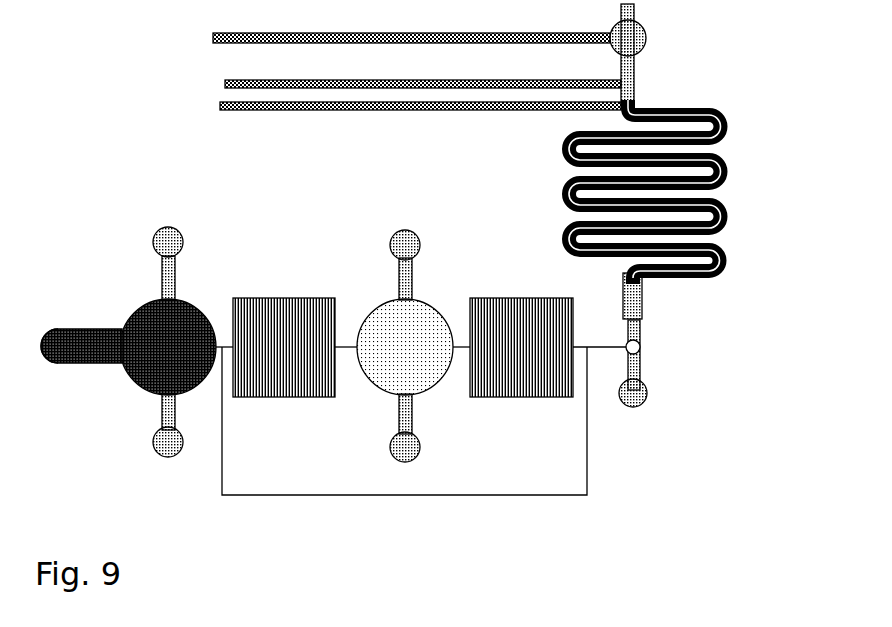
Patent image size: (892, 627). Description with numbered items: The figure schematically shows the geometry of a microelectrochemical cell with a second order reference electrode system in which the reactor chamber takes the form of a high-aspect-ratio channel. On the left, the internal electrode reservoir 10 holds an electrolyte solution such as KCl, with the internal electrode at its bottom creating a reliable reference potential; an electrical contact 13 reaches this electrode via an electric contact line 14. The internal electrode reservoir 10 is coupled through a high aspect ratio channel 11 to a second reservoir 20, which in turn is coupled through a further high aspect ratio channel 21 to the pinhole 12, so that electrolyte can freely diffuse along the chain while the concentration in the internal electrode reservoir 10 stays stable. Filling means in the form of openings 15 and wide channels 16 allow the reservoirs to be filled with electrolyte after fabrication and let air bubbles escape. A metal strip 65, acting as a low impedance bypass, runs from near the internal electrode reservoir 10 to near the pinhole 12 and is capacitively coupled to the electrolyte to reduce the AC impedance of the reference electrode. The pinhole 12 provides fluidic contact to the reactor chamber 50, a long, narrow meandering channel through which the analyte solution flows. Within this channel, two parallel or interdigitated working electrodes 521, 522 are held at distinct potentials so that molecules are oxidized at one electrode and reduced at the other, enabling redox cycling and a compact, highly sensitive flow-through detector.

The internal electrode reservoir 10 is at (168, 347).
The high aspect ratio channel 11 is at (279, 293).
The pinhole 12 is at (640, 350).
The electrical contact 13 is at (62, 336).
The electric contact line 14 is at (100, 336).
The openings 15 is at (158, 242).
The wide channels 16 is at (160, 280).
The reservoir 20 is at (405, 347).
The high aspect ratio channel 21 is at (522, 293).
The reactor chamber 50 is at (566, 141).
The metal strip 65 is at (294, 498).
The working electrode 521 is at (675, 106).
The working electrode 522 is at (713, 112).